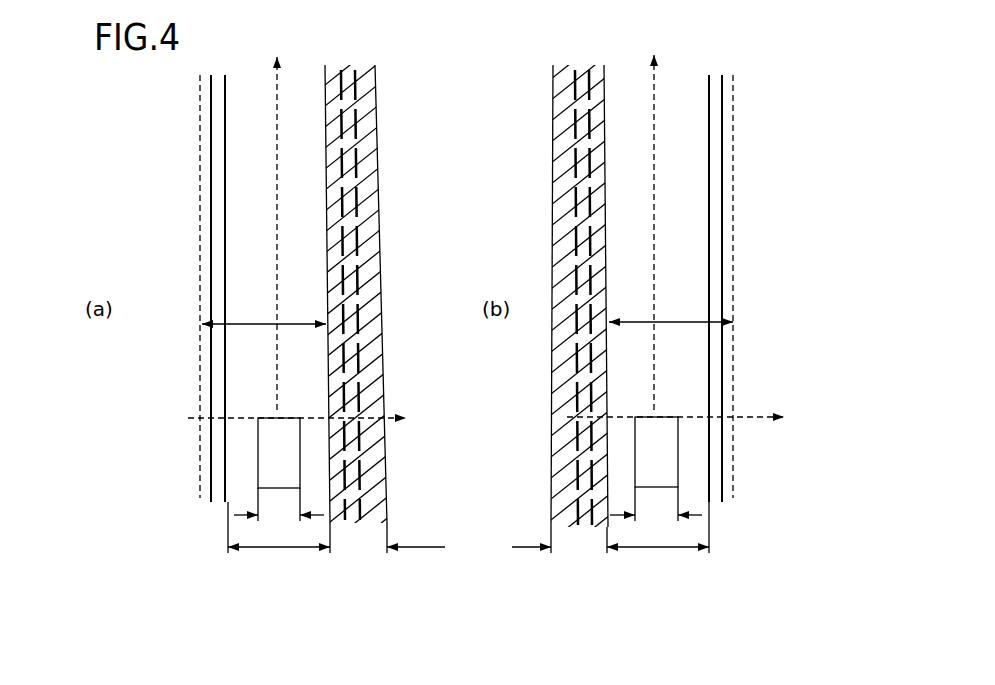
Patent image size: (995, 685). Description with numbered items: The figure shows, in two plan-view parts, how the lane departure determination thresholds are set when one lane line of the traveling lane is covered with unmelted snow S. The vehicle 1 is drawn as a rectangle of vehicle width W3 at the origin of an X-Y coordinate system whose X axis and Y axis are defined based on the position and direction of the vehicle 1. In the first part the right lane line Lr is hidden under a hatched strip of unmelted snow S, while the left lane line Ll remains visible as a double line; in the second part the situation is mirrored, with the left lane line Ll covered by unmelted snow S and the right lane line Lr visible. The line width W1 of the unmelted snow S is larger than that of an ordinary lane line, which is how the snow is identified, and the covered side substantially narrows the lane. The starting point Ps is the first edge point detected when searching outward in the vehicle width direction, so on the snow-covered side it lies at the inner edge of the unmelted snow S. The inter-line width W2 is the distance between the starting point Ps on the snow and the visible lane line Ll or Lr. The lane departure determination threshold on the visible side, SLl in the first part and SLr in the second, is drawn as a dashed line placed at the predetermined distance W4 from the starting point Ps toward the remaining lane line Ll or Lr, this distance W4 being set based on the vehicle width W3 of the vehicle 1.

In FIG. 4A, the left lane departure determination threshold SLl is at (200, 124).
In FIG. 4A, the left lane line Ll is at (211, 232).
In FIG. 4B, the left lane line Ll is at (583, 297).
In FIG. 4A, the unmelted snow S is at (381, 150).
In FIG. 4B, the unmelted snow S is at (551, 183).
In FIG. 4A, the right lane line Lr is at (356, 236).
In FIG. 4B, the right lane line Lr is at (722, 210).
In FIG. 4B, the right lane departure determination threshold SLr is at (732, 157).
In FIG. 4A, the starting point Ps is at (325, 322).
In FIG. 4B, the starting point Ps is at (610, 321).
In FIG. 4A, the line width W1 is at (416, 538).
In FIG. 4B, the line width W1 is at (529, 535).
In FIG. 4A, the inter-line width W2 is at (279, 527).
In FIG. 4B, the inter-line width W2 is at (658, 527).
In FIG. 4A, the vehicle width W3 is at (279, 504).
In FIG. 4B, the vehicle width W3 is at (656, 504).
In FIG. 4A, the predetermined distance W4 is at (264, 310).
In FIG. 4B, the predetermined distance W4 is at (671, 309).
In FIG. 4B, the vehicle 1 is at (678, 450).
In FIG. 4A, the X coordinate axis X is at (275, 218).
In FIG. 4B, the X coordinate axis X is at (653, 217).
In FIG. 4A, the Y coordinate axis Y is at (307, 420).
In FIG. 4B, the Y coordinate axis Y is at (686, 418).